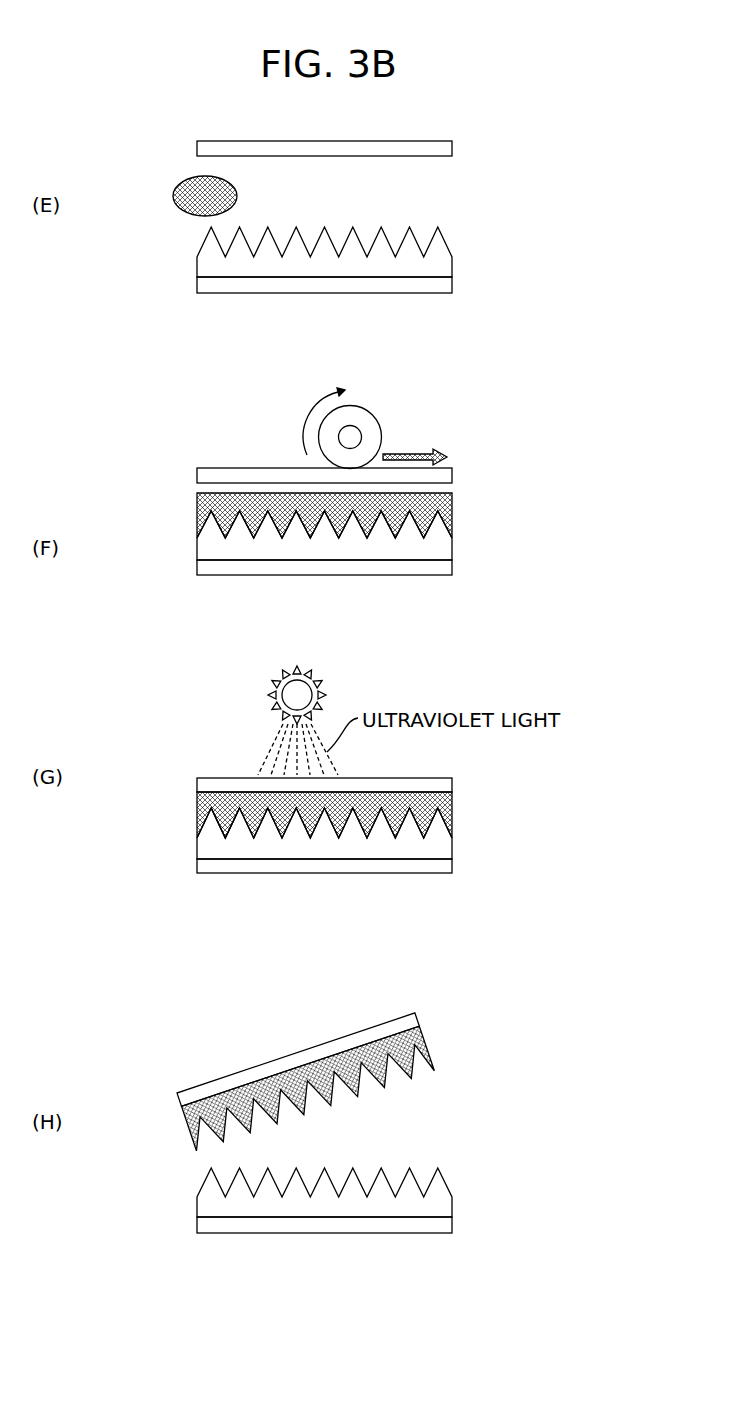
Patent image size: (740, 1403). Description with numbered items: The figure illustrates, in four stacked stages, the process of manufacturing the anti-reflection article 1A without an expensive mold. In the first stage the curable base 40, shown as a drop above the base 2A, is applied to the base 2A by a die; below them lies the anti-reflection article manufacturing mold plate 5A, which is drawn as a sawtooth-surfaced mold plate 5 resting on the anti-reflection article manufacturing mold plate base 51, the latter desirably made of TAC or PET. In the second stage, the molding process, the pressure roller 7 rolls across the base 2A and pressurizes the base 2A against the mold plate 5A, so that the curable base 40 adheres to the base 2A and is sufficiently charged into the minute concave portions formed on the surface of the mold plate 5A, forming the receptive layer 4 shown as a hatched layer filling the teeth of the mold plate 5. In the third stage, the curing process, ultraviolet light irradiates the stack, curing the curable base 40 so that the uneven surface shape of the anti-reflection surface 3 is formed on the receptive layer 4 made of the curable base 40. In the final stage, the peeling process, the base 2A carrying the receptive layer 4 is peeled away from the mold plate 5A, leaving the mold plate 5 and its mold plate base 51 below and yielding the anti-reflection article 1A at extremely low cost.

The base 2A is at (452, 149).
The curable base 40 is at (186, 180).
The anti-reflection article manufacturing mold plate 5 is at (452, 268).
The anti-reflection article manufacturing mold plate base 51 is at (452, 284).
The anti-reflection article manufacturing mold plate 5A is at (188, 277).
The pressure roller 7 is at (367, 427).
The receptive layer 4 is at (452, 502).
The anti-reflection surface 3 is at (222, 823).
The anti-reflection article 1A is at (259, 1058).